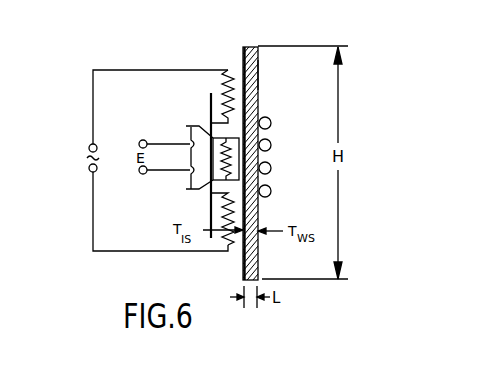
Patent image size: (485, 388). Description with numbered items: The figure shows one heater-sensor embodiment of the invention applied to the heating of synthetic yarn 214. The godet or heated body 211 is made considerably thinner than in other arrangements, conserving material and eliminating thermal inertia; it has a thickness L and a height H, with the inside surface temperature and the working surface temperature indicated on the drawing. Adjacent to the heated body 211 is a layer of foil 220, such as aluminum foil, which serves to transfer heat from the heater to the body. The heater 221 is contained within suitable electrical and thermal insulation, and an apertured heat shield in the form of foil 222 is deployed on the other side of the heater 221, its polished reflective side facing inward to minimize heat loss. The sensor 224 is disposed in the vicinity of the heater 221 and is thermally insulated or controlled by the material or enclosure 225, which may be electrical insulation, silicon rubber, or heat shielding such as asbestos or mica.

The layer of foil 220 is at (243, 62).
The heated body 211 is at (312, 56).
The synthetic yarn 214 is at (271, 164).
The apertured heat shield foil 222 is at (208, 112).
The sensor 224 is at (192, 127).
The material or enclosure 225 is at (195, 189).
The heater 221 is at (222, 245).